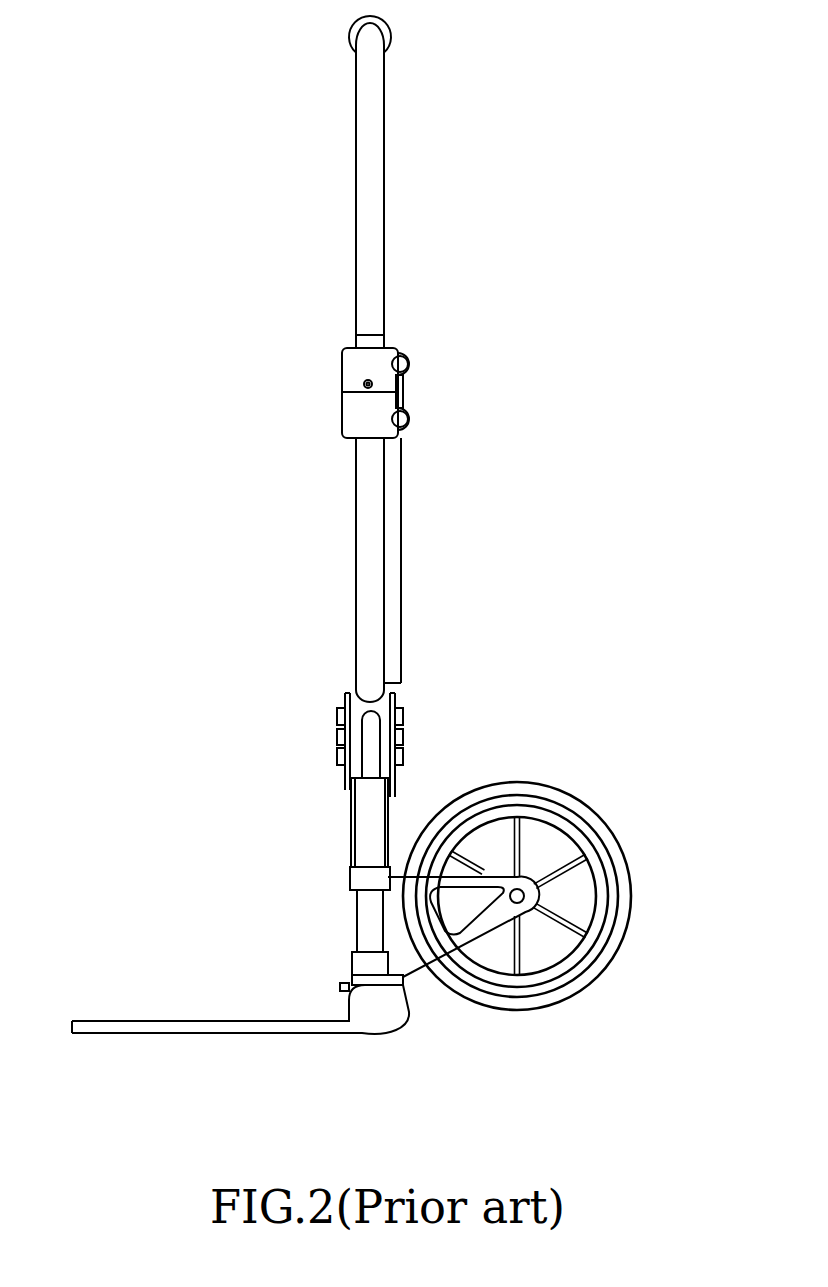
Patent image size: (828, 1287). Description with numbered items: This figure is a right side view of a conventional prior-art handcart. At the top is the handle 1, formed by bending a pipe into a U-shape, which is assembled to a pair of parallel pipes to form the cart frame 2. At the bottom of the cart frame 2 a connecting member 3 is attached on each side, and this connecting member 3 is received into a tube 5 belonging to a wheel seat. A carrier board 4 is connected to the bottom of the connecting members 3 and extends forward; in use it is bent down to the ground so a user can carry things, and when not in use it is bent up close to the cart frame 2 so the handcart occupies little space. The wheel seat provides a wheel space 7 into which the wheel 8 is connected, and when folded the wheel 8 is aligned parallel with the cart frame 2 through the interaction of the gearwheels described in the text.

The handle 1 is at (377, 197).
The cart frame 2 is at (375, 542).
The connecting member 3 is at (358, 818).
The carrier board 4 is at (208, 1027).
The tube 5 is at (364, 938).
The wheel space 7 is at (398, 904).
The wheel 8 is at (615, 856).